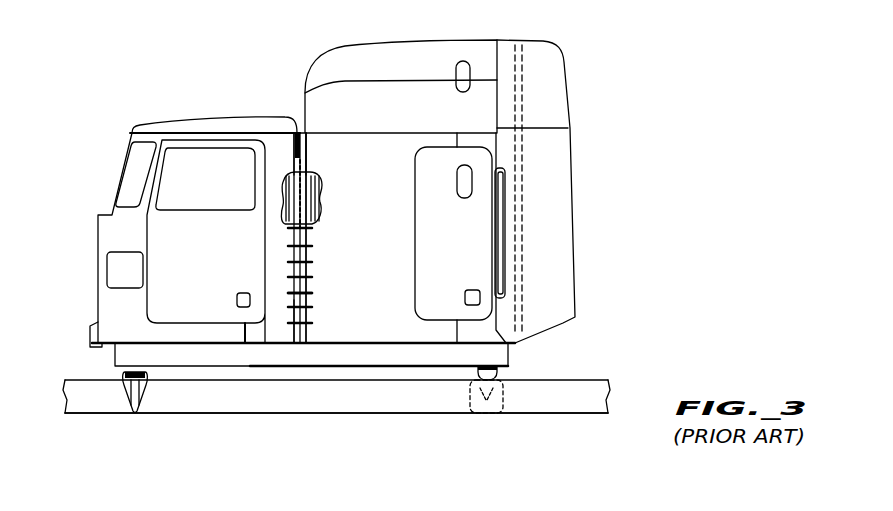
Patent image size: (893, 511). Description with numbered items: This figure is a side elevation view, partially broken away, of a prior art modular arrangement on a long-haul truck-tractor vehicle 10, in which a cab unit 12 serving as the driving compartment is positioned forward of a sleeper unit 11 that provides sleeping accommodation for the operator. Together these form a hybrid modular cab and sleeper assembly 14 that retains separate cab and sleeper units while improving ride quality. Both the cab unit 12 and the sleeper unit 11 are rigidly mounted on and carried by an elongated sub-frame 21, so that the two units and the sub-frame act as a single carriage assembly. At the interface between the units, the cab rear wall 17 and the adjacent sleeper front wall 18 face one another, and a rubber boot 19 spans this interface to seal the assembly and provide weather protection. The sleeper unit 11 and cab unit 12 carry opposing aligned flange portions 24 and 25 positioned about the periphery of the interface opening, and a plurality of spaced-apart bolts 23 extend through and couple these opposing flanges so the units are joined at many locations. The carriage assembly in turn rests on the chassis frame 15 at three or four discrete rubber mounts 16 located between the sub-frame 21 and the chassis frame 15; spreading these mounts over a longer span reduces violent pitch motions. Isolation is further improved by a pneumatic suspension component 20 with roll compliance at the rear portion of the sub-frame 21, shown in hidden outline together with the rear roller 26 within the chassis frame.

The truck-tractor vehicle 10 is at (640, 146).
The sleeper unit 11 is at (456, 30).
The cab unit 12 is at (177, 110).
The cab and sleeper assembly 14 is at (108, 51).
The chassis frame 15 is at (590, 414).
The rubber mounts 16 is at (124, 395).
The cab rear wall 17 is at (304, 155).
The sleeper front wall 18 is at (296, 157).
The rubber boot 19 is at (321, 198).
The pneumatic suspension component 20 is at (500, 412).
The sub-frame 21 is at (516, 357).
The bolts 23 is at (316, 262).
The flange portion 24 is at (312, 298).
The flange portion 25 is at (291, 317).
The hidden roller 26 is at (470, 395).